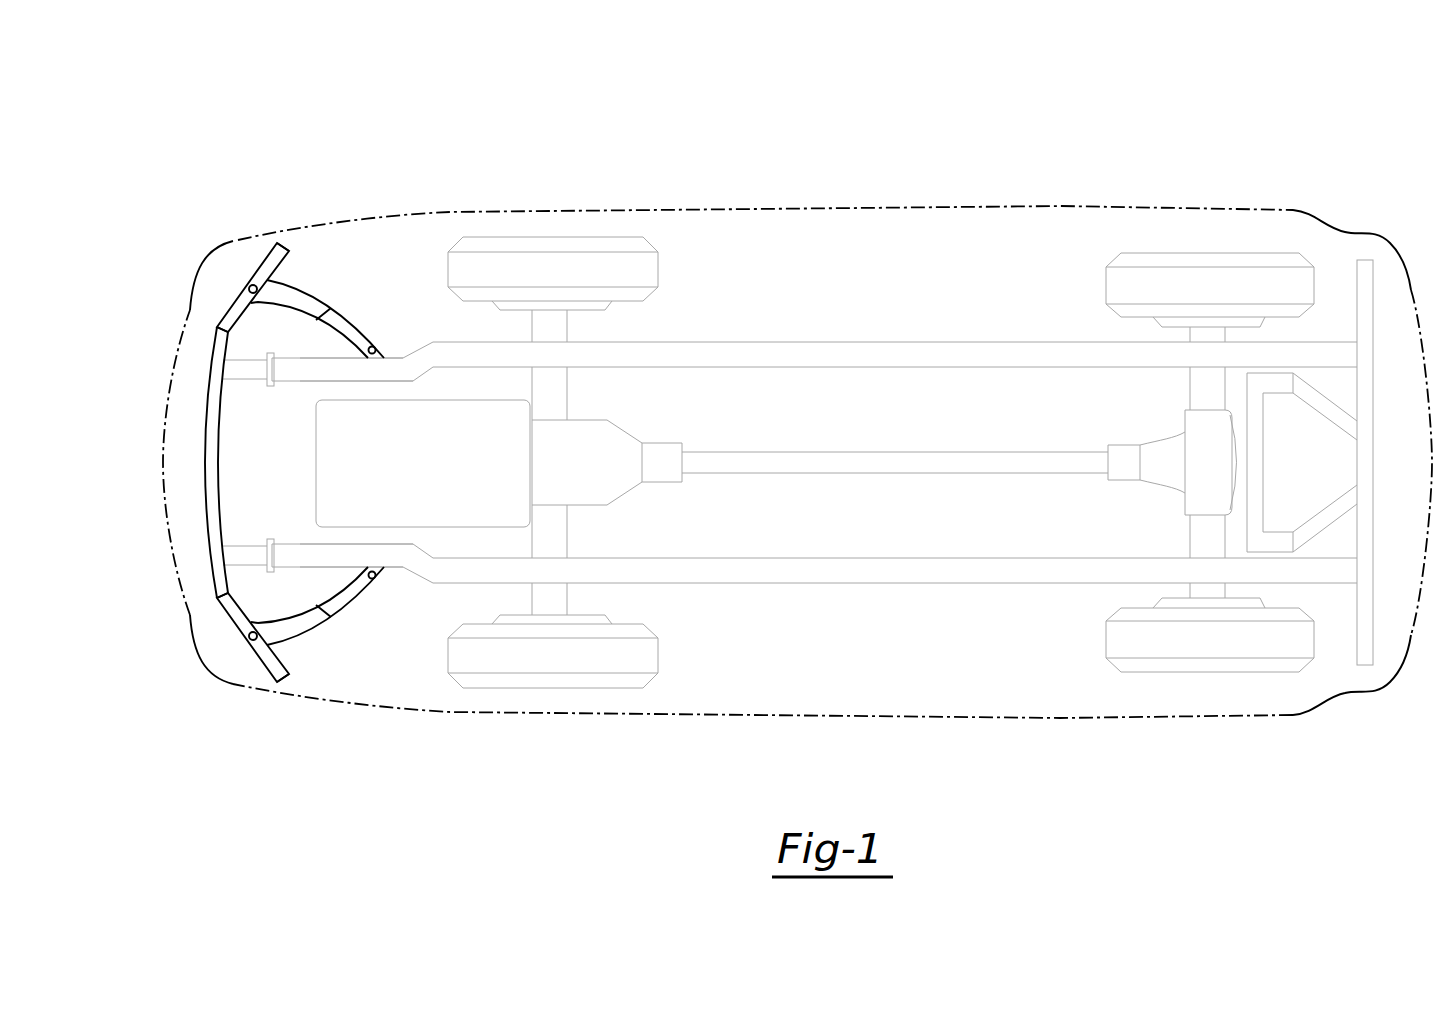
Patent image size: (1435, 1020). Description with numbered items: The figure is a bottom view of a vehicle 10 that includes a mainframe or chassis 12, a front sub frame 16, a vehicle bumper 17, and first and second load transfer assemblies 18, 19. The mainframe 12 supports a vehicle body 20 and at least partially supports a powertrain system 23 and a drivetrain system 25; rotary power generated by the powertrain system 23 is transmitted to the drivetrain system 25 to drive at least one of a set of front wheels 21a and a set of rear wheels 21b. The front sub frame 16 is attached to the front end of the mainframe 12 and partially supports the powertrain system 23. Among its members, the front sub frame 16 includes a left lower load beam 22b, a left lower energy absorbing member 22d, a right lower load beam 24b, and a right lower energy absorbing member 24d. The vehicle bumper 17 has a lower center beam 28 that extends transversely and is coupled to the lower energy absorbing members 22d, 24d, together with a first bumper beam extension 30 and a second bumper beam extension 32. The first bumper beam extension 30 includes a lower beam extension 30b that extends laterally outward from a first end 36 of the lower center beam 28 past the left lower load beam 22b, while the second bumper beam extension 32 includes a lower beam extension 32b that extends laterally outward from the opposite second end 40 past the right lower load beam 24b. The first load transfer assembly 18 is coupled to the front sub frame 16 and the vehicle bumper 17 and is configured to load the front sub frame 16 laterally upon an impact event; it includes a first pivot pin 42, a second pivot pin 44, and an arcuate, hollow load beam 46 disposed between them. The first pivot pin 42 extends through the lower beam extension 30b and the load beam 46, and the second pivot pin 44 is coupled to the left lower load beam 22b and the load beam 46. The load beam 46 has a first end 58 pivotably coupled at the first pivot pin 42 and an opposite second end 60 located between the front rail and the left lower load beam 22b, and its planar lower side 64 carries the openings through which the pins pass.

The vehicle 10 is at (797, 392).
The vehicle body 20 is at (1020, 207).
The front wheels 21a is at (585, 240).
The rear wheels 21b is at (1260, 253).
The mainframe 12 is at (912, 345).
The front sub frame 16 is at (403, 352).
The first load transfer assembly 18 is at (335, 646).
The second load transfer assembly 19 is at (318, 275).
The vehicle bumper 17 is at (207, 387).
The left lower load beam 22b is at (402, 572).
The left lower energy absorbing member 22d is at (250, 557).
The powertrain system 23 is at (317, 466).
The right lower load beam 24b is at (362, 372).
The right lower energy absorbing member 24d is at (256, 383).
The drivetrain system 25 is at (799, 444).
The lower center beam 28 is at (208, 492).
The first bumper beam extension 30 is at (226, 638).
The lower beam extension 30b is at (263, 668).
The second bumper beam extension 32 is at (240, 273).
The lower beam extension 32b is at (222, 322).
The first end 36 is at (218, 587).
The second end 40 is at (217, 341).
The first pivot pin 42 is at (252, 642).
The second pivot pin 44 is at (370, 578).
The load beam 46 is at (294, 644).
The first end 58 is at (268, 628).
The second end 60 is at (407, 540).
The planar lower side 64 is at (333, 600).